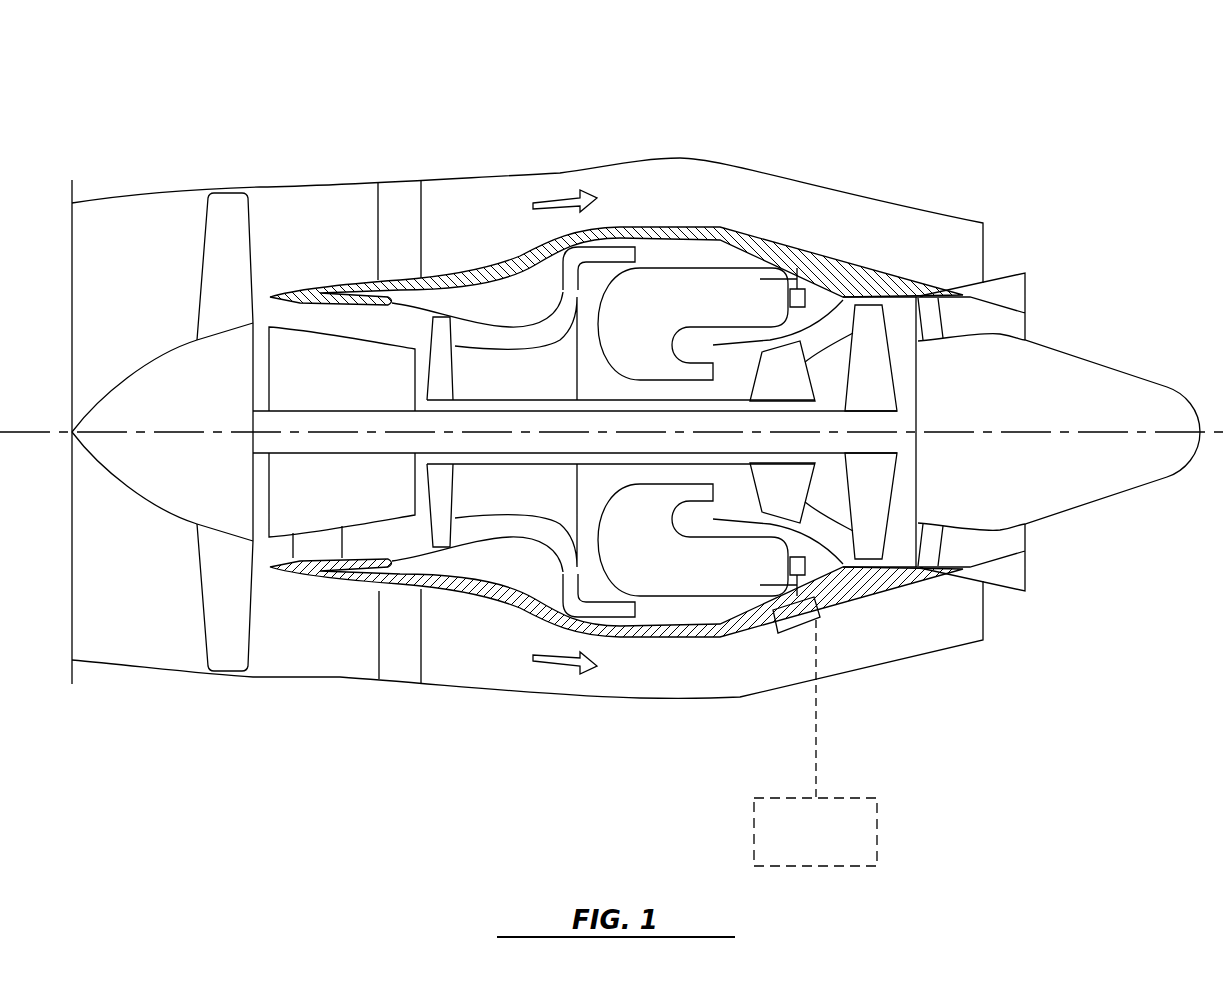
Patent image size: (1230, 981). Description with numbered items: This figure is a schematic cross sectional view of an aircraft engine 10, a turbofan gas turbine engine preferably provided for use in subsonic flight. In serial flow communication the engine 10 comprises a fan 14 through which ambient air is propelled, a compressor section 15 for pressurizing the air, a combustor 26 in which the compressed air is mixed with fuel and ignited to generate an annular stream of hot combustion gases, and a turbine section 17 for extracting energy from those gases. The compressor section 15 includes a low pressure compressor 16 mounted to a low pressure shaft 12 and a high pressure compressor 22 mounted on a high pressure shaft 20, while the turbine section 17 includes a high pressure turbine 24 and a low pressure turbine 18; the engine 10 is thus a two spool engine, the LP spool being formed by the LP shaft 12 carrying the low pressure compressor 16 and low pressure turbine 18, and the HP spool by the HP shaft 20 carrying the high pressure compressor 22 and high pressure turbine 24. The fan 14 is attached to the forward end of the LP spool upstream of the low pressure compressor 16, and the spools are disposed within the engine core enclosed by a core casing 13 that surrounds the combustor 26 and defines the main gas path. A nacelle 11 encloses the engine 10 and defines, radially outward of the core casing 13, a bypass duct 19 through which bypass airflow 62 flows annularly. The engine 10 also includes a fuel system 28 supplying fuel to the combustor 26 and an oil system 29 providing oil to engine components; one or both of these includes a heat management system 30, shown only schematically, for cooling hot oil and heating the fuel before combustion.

The aircraft engine 10 is at (978, 120).
The nacelle 11 is at (575, 173).
The low pressure shaft 12 is at (350, 410).
The core casing 13 is at (615, 230).
The fan 14 is at (205, 232).
The compressor section 15 is at (404, 304).
The low pressure compressor 16 is at (288, 365).
The turbine section 17 is at (843, 297).
The low pressure turbine 18 is at (900, 297).
The bypass duct 19 is at (655, 690).
The high pressure shaft 20 is at (502, 400).
The high pressure compressor 22 is at (455, 332).
The high pressure turbine 24 is at (843, 297).
The combustor 26 is at (725, 293).
The fuel system 28 is at (790, 290).
The oil system 29 is at (847, 826).
The heat management system 30 is at (788, 617).
The bypass airflow 62 is at (550, 667).